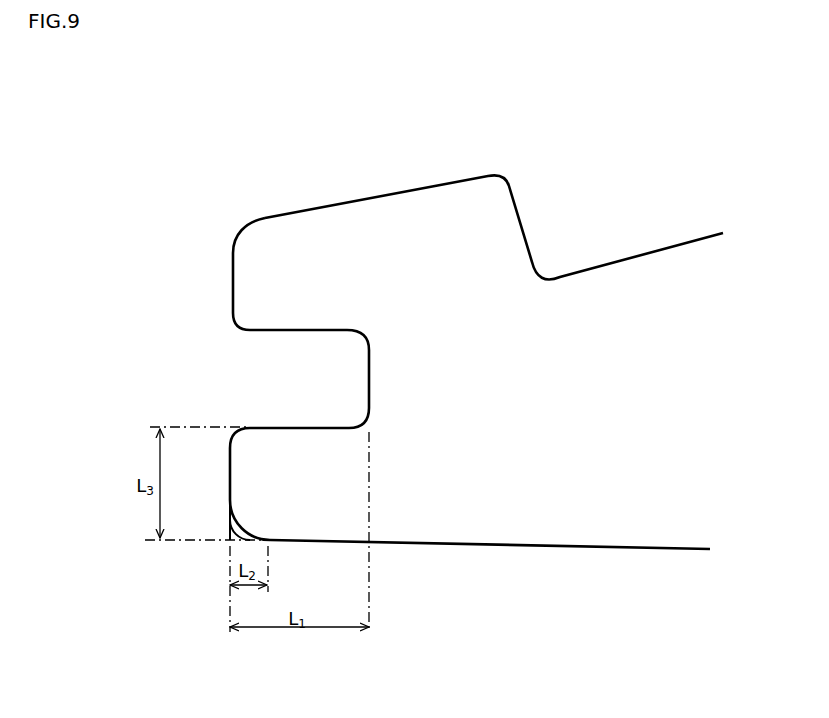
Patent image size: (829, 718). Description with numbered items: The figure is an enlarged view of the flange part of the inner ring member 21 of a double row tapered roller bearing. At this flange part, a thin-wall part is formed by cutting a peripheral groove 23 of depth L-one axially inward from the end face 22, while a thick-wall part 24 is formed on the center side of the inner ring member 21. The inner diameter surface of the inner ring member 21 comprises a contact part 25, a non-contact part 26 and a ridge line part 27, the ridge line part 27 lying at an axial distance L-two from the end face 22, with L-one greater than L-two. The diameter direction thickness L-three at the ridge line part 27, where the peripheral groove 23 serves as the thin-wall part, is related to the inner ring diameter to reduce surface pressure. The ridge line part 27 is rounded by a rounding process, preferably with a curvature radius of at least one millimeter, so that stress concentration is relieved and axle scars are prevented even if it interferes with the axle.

The inner ring member 21 is at (215, 188).
The end face 22 is at (233, 284).
The peripheral groove 23 is at (293, 377).
The thick-wall part 24 is at (441, 222).
The contact part 25 is at (492, 547).
The non-contact part 26 is at (229, 532).
The ridge line part 27 is at (236, 498).